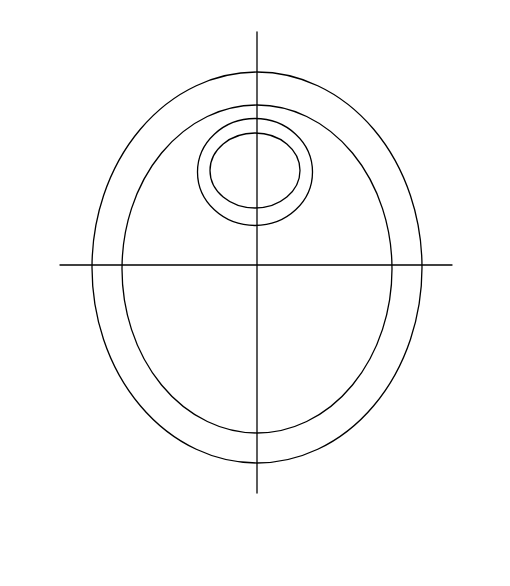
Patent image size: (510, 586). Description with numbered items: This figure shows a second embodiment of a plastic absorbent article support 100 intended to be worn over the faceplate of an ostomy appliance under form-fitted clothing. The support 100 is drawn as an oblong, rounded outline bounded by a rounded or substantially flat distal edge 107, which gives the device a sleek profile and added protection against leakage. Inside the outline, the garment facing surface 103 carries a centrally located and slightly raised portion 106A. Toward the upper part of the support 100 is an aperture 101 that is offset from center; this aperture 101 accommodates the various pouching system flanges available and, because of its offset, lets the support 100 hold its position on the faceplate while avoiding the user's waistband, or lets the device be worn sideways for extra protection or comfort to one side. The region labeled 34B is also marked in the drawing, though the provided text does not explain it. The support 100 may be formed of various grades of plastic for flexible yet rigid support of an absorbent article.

The absorbent article support 100 is at (417, 82).
The aperture 101 is at (205, 143).
The garment facing surface 103 is at (175, 252).
The raised portion 106A is at (376, 190).
The distal edge 107 is at (414, 323).
The opening 34B is at (227, 132).